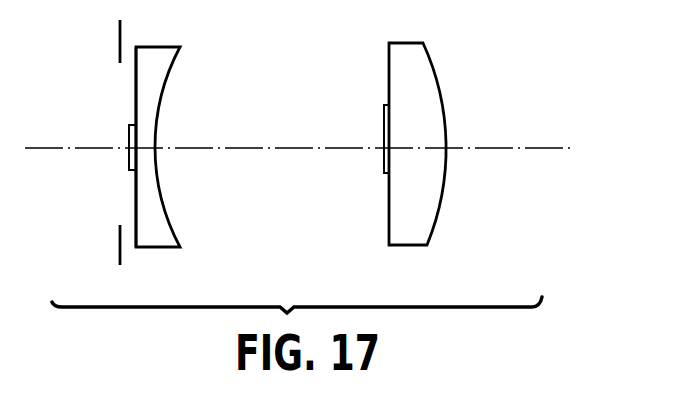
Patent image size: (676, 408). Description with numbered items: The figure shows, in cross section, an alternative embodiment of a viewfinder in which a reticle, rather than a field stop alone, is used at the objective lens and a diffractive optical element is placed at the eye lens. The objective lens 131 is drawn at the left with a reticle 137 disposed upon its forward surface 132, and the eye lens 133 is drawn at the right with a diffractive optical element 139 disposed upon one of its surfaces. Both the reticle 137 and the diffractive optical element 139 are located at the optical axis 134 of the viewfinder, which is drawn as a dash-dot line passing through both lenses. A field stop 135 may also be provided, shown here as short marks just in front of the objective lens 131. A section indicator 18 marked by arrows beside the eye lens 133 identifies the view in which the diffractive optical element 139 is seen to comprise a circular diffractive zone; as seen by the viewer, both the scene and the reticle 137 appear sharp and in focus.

The objective lens 131 is at (181, 243).
The forward surface 132 is at (135, 100).
The eye lens 133 is at (436, 222).
The optical axis 134 is at (500, 148).
The field stop 135 is at (119, 43).
The reticle 137 is at (128, 163).
The diffractive optical element 139 is at (384, 125).
The section line for FIG. 18 is at (331, 75).